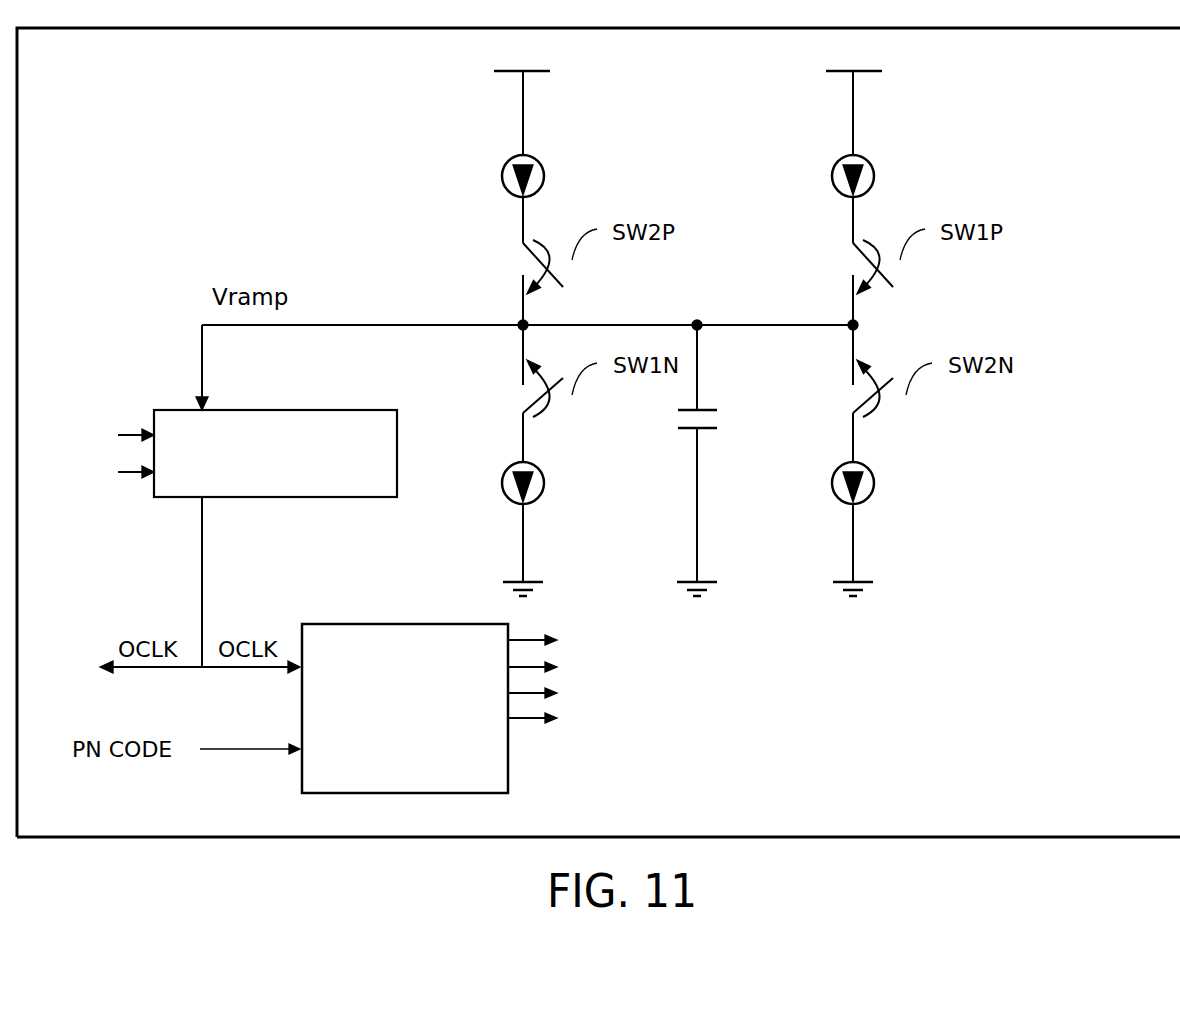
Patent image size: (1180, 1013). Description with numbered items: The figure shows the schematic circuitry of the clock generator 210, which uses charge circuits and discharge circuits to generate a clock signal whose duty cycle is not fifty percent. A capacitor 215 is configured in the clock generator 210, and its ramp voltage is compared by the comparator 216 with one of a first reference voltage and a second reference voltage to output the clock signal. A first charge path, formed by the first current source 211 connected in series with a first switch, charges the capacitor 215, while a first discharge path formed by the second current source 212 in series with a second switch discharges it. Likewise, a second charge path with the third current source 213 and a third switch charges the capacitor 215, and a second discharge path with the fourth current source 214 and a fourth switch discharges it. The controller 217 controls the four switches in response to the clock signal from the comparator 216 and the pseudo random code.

The clock generator 210 is at (1170, 802).
The first current source 211 is at (868, 157).
The second current source 212 is at (540, 466).
The third current source 213 is at (538, 157).
The fourth current source 214 is at (870, 466).
The capacitor 215 is at (706, 404).
The comparator 216 is at (282, 410).
The controller 217 is at (316, 624).